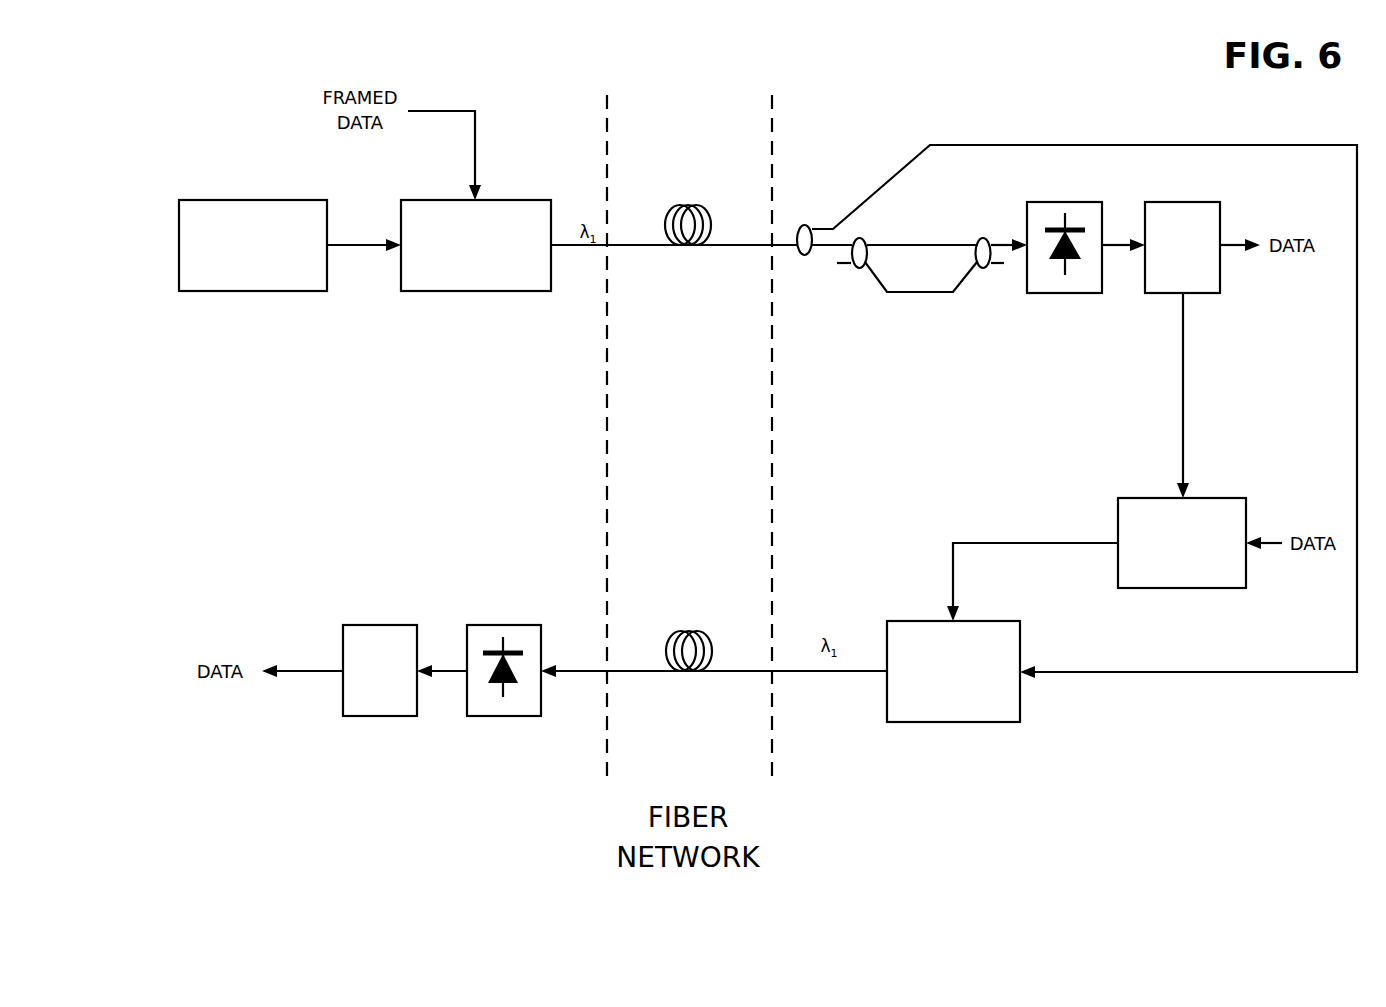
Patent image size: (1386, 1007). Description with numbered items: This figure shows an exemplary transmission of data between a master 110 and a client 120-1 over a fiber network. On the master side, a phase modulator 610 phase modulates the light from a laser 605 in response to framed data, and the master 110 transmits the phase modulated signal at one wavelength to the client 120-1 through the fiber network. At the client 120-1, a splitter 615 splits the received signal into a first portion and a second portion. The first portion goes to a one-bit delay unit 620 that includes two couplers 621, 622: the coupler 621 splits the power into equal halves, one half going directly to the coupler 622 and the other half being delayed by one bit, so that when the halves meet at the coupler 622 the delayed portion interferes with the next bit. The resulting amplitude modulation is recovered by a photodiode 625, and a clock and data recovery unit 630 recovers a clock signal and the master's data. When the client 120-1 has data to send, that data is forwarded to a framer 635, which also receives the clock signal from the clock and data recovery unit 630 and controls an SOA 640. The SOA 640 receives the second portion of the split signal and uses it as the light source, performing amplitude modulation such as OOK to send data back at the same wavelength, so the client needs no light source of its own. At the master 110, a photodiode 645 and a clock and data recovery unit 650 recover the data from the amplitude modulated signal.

The master 110 is at (409, 836).
The client 120-1 is at (1070, 836).
The laser 605 is at (253, 245).
The phase modulator 610 is at (476, 245).
The splitter 615 is at (804, 225).
The 1 bit delay unit 620 is at (920, 297).
The coupler 621 is at (866, 240).
The coupler 622 is at (983, 238).
The photodiode 625 is at (1065, 293).
The clock and data recovery unit 630 is at (1182, 247).
The framer 635 is at (1182, 543).
The SOA 640 is at (953, 671).
The photodiode 645 is at (505, 625).
The clock and data recovery (CDR) unit 650 is at (380, 670).